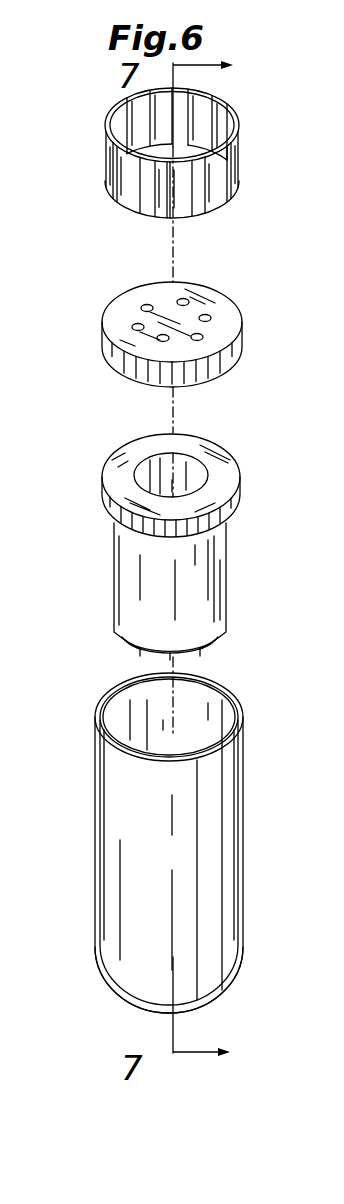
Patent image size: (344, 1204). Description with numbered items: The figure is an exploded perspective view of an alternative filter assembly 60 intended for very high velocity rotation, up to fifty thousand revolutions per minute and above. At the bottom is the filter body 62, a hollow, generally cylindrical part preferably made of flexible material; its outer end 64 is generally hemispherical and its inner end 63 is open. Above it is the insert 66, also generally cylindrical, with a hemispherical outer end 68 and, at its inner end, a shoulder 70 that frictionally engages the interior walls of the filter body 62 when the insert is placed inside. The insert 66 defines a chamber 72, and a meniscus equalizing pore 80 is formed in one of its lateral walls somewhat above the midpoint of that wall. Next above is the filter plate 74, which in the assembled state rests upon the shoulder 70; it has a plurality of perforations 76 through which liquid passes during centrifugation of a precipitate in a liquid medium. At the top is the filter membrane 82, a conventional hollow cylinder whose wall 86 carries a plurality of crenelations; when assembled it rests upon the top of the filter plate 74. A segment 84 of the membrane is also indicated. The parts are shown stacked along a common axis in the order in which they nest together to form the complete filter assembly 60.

The filter assembly 60 is at (259, 314).
The filter body 62 is at (243, 773).
The open inner end 63 is at (108, 703).
The outer end 64 is at (120, 987).
The insert 66 is at (227, 570).
The outer end 68 is at (208, 656).
The shoulder 70 is at (223, 475).
The chamber 72 is at (197, 464).
The filter plate 74 is at (202, 295).
The perforations 76 is at (157, 339).
The meniscus equalizing pore 80 is at (217, 554).
The filter membrane 82 is at (217, 100).
The ring segment 84 is at (240, 157).
The wall 86 is at (110, 182).